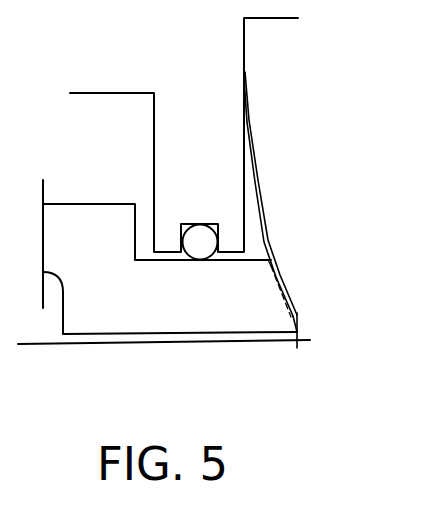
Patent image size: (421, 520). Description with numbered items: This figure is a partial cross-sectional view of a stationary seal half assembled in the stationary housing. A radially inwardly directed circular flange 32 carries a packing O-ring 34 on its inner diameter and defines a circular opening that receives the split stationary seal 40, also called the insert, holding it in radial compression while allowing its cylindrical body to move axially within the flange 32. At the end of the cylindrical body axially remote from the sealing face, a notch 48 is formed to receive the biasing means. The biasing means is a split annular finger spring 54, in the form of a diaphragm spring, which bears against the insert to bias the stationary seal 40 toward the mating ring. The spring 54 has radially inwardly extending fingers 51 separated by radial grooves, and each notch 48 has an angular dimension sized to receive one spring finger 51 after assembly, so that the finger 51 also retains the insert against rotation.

The circular flange 32 is at (222, 115).
The packing O-ring 34 is at (198, 240).
The split stationary seal 40 is at (105, 322).
The notch 48 is at (297, 348).
The spring finger 51 is at (300, 312).
The split annular finger spring 54 is at (262, 181).